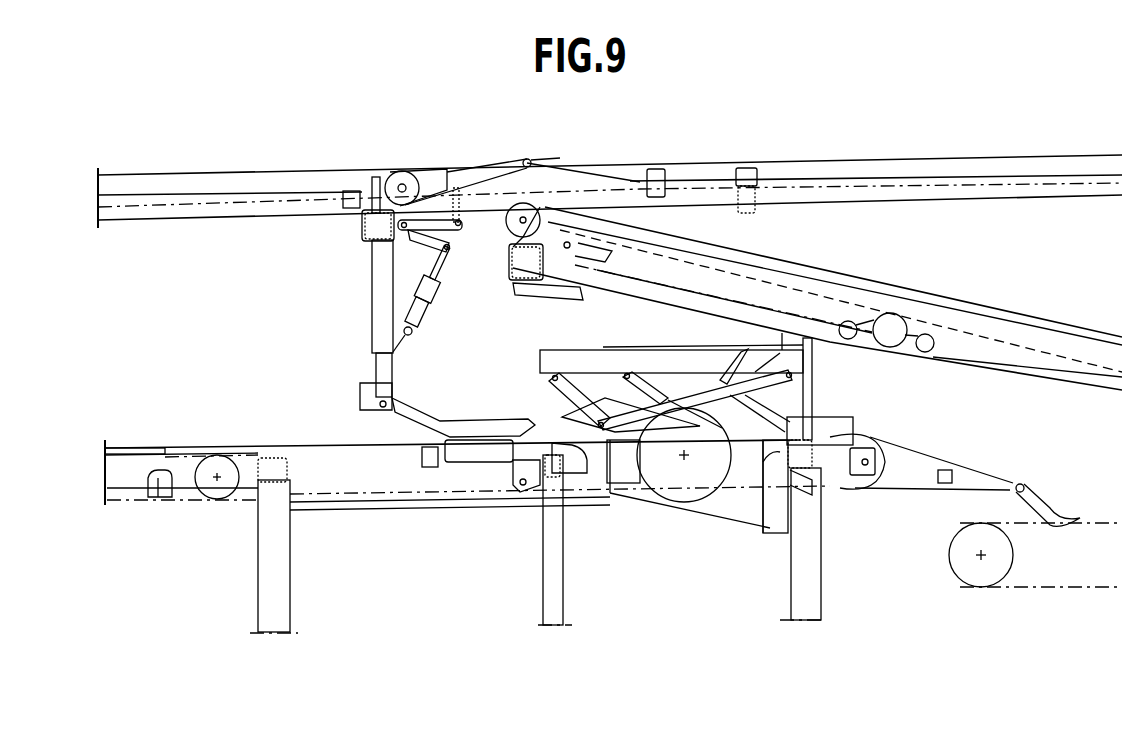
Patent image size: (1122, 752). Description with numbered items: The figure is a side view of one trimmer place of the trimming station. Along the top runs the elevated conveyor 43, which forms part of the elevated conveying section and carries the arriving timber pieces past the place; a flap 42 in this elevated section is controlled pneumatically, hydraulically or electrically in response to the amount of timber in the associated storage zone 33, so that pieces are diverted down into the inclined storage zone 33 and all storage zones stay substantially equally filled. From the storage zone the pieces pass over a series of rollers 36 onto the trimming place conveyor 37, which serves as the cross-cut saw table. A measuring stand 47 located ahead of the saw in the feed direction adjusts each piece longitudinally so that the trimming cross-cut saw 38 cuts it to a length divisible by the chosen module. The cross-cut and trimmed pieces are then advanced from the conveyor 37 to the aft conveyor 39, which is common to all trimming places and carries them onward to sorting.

The storage zone 33 is at (820, 272).
The series of rollers 36 is at (125, 448).
The trimming place conveyor 37 is at (206, 448).
The trimming cross-cut saw 38 is at (672, 487).
The aft conveyor 39 is at (1067, 590).
The flap 42 is at (458, 180).
The conveyor 43 is at (268, 174).
The measuring stand 47 is at (430, 412).